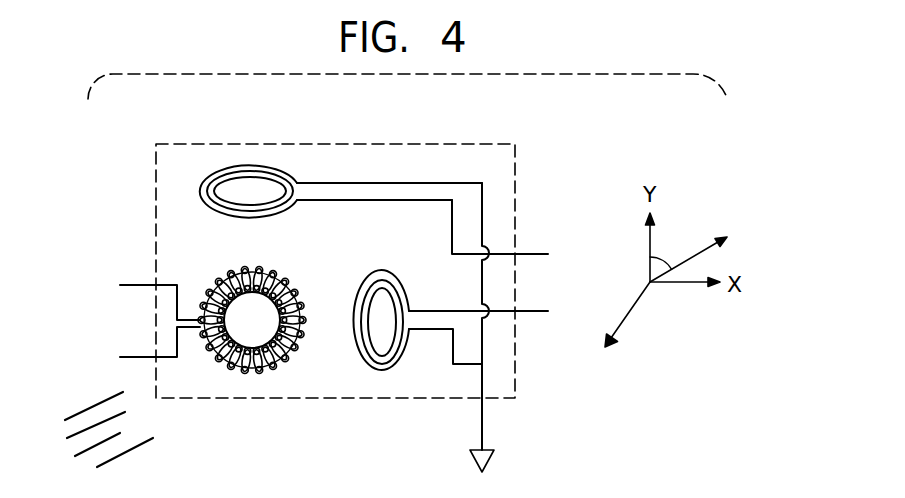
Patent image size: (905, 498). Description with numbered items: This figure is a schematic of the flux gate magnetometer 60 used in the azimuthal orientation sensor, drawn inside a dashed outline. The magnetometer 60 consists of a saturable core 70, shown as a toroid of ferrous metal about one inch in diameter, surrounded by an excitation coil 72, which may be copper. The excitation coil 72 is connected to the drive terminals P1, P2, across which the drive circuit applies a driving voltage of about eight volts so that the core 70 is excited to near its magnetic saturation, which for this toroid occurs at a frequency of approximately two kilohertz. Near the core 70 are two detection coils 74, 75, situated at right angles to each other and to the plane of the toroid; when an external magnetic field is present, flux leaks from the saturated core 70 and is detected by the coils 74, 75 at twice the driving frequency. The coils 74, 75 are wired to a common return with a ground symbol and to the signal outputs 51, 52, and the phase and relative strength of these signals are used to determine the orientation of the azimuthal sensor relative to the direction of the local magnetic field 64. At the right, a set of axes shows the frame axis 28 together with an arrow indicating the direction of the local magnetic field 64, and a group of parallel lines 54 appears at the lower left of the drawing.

The frame axis 28 is at (625, 319).
The first output terminal 51 is at (516, 233).
The second output terminal 52 is at (495, 312).
The magnetic stripe / card 54 is at (133, 448).
The flux gate magnetometer 60 is at (155, 168).
The local magnetic field 64 is at (693, 253).
The saturable core 70 is at (267, 360).
The excitation coil 72 is at (217, 367).
The detection coil 74 is at (245, 166).
The detection coil 75 is at (385, 374).
The drive terminal P1 is at (146, 296).
The drive terminal P2 is at (146, 348).